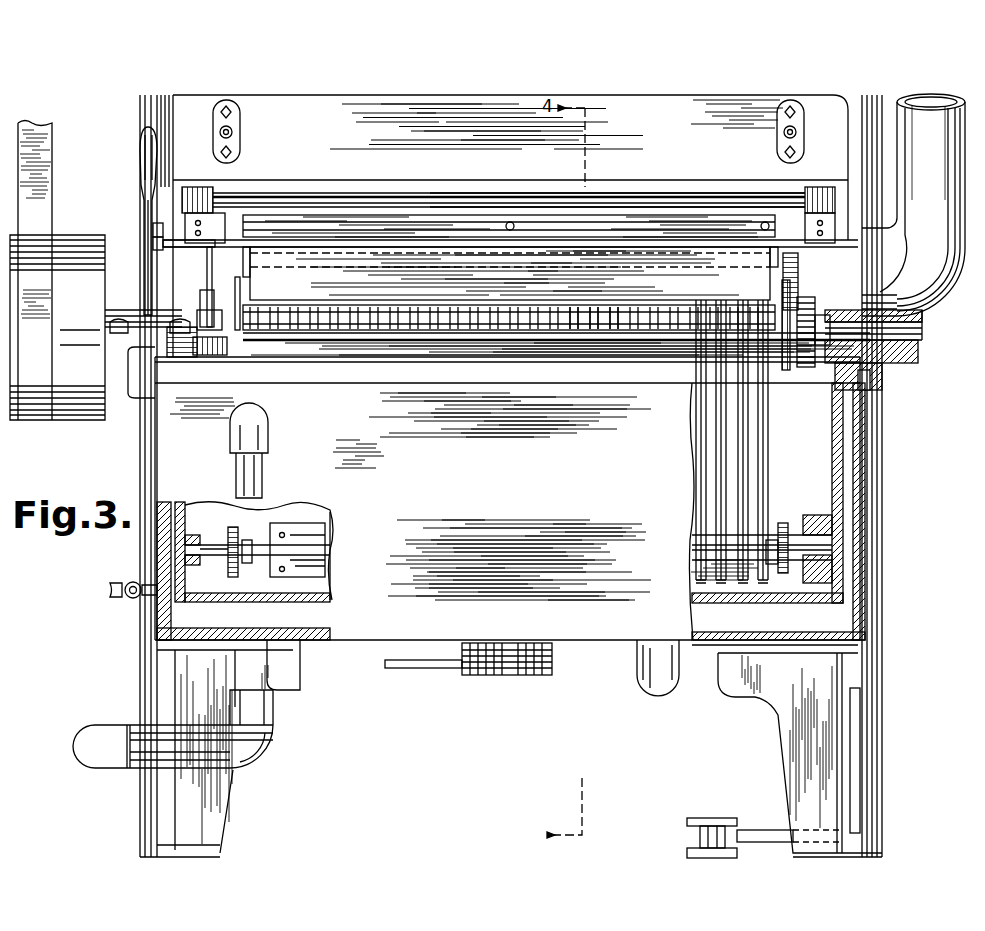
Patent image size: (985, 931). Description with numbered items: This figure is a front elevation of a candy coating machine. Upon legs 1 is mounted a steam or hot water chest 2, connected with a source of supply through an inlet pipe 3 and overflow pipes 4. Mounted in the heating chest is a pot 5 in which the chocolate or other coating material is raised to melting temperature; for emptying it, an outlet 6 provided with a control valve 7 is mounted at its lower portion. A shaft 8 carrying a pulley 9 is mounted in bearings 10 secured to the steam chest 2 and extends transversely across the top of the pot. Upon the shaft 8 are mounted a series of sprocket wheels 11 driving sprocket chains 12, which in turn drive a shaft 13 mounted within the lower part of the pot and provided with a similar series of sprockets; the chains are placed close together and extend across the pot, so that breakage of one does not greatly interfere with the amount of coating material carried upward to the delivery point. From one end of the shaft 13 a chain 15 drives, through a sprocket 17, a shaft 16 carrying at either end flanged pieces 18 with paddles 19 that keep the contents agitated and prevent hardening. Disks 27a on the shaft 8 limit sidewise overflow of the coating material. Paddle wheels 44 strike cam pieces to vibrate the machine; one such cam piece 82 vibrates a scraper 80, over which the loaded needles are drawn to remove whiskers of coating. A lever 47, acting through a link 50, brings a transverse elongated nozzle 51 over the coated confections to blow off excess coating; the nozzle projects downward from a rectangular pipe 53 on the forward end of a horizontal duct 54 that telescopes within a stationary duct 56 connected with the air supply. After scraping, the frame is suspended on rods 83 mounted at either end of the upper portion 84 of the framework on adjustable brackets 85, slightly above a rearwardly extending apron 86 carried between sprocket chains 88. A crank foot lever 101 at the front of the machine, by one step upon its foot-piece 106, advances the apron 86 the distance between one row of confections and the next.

The legs 1 is at (220, 801).
The steam or hot water chest 2 is at (343, 640).
The inlet pipe 3 is at (120, 594).
The overflow pipes 4 is at (258, 492).
The pot 5 is at (190, 512).
The outlet 6 is at (502, 676).
The control valve 7 is at (455, 668).
The shaft 8 is at (922, 331).
The pulley 9 is at (68, 248).
The bearings 10 is at (137, 315).
The sprocket wheels 11 is at (616, 330).
The sprocket chains 12 is at (728, 488).
The shaft 13 is at (816, 546).
The chain 15 is at (236, 530).
The shaft 16 is at (226, 556).
The sprocket 17 is at (241, 564).
The flanged pieces 18 is at (282, 578).
The paddles 19 is at (338, 542).
The disks 27a is at (238, 302).
The paddle wheels 44 is at (203, 300).
The lever 47 is at (145, 160).
The link 50 is at (153, 226).
The nozzle 51 is at (367, 298).
The rectangular pipe 53 is at (250, 279).
The horizontal duct 54 is at (506, 272).
The stationary duct 56 is at (780, 270).
The scraper 80 is at (333, 215).
The cam piece 82 is at (207, 276).
The rods 83 is at (230, 136).
The upper portion of the framework 84 is at (183, 117).
The brackets 85 is at (238, 120).
The apron 86 is at (660, 193).
The sprocket chains 88 is at (815, 189).
The crank foot lever 101 is at (855, 745).
The foot-piece 106 is at (712, 818).